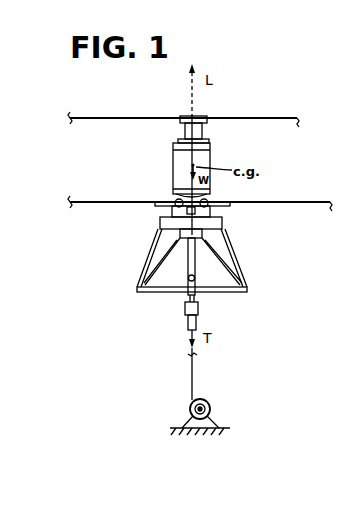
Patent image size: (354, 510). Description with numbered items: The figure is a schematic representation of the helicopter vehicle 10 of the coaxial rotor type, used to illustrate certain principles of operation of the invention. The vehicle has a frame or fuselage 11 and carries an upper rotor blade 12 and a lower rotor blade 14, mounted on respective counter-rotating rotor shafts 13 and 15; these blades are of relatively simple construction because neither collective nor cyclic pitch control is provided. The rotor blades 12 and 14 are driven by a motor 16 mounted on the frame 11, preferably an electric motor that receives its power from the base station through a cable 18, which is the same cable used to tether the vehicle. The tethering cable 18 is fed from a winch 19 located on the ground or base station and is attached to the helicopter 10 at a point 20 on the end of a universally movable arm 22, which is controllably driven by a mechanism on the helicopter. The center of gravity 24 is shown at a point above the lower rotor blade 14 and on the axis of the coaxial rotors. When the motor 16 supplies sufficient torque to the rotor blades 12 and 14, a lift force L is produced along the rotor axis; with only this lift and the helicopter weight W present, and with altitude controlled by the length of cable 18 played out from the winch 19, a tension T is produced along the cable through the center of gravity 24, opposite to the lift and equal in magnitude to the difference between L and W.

The helicopter vehicle 10 is at (255, 108).
The frame or fuselage 11 is at (160, 236).
The upper rotor blade 12 is at (194, 126).
The rotor shaft 13 is at (185, 118).
The lower rotor blade 14 is at (210, 212).
The rotor shaft 15 is at (215, 209).
The motor 16 is at (204, 156).
The cable 18 is at (194, 372).
The winch 19 is at (212, 402).
The attachment point 20 is at (182, 285).
The universally movable arm 22 is at (195, 265).
The center of gravity 24 is at (185, 165).